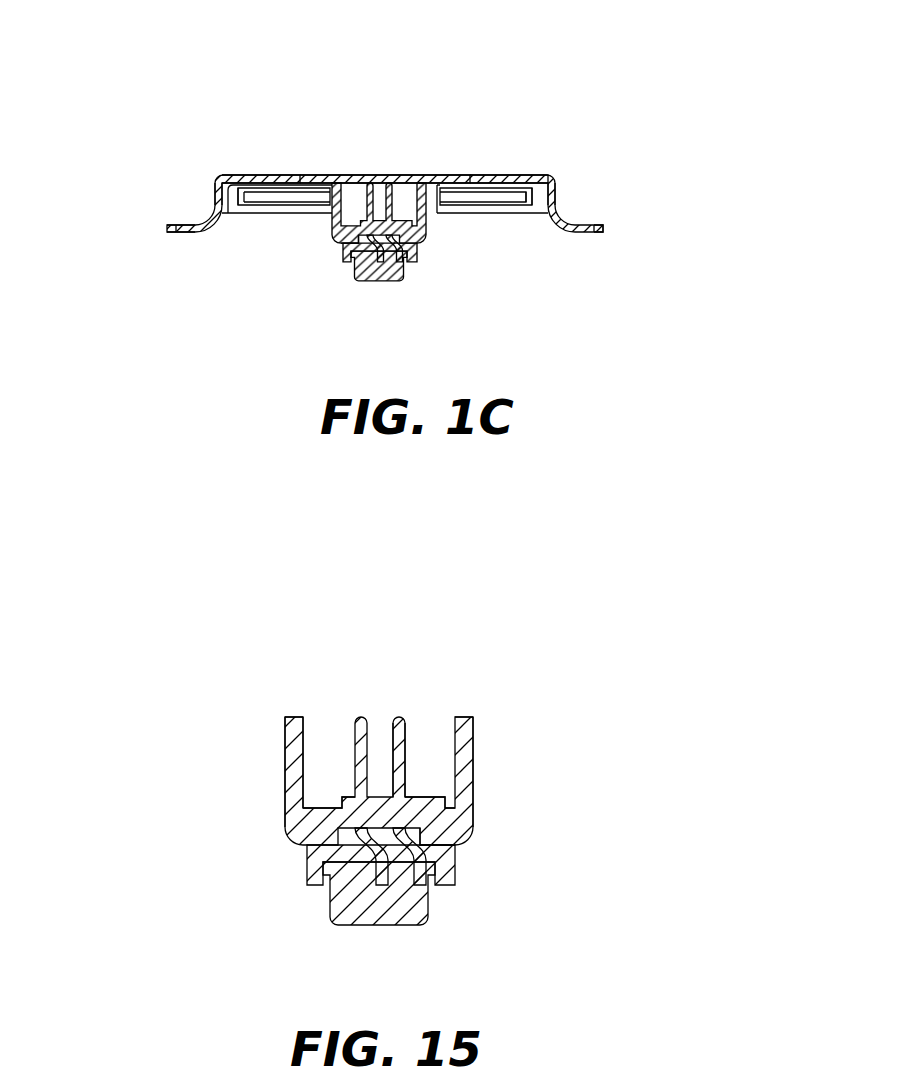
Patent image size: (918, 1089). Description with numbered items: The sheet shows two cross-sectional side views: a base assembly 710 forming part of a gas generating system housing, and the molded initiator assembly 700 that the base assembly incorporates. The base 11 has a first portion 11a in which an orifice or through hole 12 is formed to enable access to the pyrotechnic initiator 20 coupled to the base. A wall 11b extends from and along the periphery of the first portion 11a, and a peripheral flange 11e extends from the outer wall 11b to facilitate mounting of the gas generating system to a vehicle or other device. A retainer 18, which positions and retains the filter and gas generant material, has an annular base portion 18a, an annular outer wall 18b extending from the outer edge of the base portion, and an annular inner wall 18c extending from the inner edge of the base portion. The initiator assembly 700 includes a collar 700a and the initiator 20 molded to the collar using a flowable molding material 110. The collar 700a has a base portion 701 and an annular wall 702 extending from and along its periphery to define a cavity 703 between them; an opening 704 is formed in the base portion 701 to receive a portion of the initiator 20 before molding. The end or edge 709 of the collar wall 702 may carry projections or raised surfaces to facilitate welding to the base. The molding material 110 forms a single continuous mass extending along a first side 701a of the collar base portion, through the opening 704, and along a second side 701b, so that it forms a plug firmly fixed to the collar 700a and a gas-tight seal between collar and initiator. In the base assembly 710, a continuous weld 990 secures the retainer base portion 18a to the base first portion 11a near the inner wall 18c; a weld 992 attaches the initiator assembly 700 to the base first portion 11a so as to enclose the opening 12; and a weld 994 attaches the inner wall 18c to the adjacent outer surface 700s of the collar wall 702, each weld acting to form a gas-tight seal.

In FIG. 1C, the base 11 is at (250, 168).
In FIG. 1C, the first portion 11a is at (282, 177).
In FIG. 1C, the wall 11b is at (212, 195).
In FIG. 1C, the peripheral flange 11e is at (180, 233).
In FIG. 1C, the orifice or through hole 12 is at (381, 180).
In FIG. 1C, the retainer 18 is at (538, 177).
In FIG. 1C, the base portion 18a is at (502, 180).
In FIG. 1C, the outer wall 18b is at (531, 200).
In FIG. 1C, the inner wall 18c is at (437, 196).
In FIG. 1C, the initiator 20 is at (404, 282).
In FIG. 15, the initiator 20 is at (432, 924).
In FIG. 1C, the molding material 110 is at (376, 246).
In FIG. 15, the molding material 110 is at (350, 836).
In FIG. 1C, the initiator assembly 700 is at (428, 240).
In FIG. 15, the initiator assembly 700 is at (402, 679).
In FIG. 1C, the collar 700a is at (357, 229).
In FIG. 15, the collar 700a is at (474, 722).
In FIG. 15, the outer surface 700s is at (473, 748).
In FIG. 15, the base portion 701 is at (320, 838).
In FIG. 15, the first side 701a is at (432, 826).
In FIG. 15, the second side 701b is at (452, 843).
In FIG. 15, the annular wall 702 is at (285, 773).
In FIG. 15, the cavity 703 is at (330, 745).
In FIG. 15, the opening 704 is at (421, 827).
In FIG. 15, the end or edge 709 is at (292, 722).
In FIG. 1C, the base assembly 710 is at (717, 247).
In FIG. 1C, the weld 990 is at (298, 177).
In FIG. 1C, the weld 992 is at (428, 186).
In FIG. 1C, the weld 994 is at (336, 187).